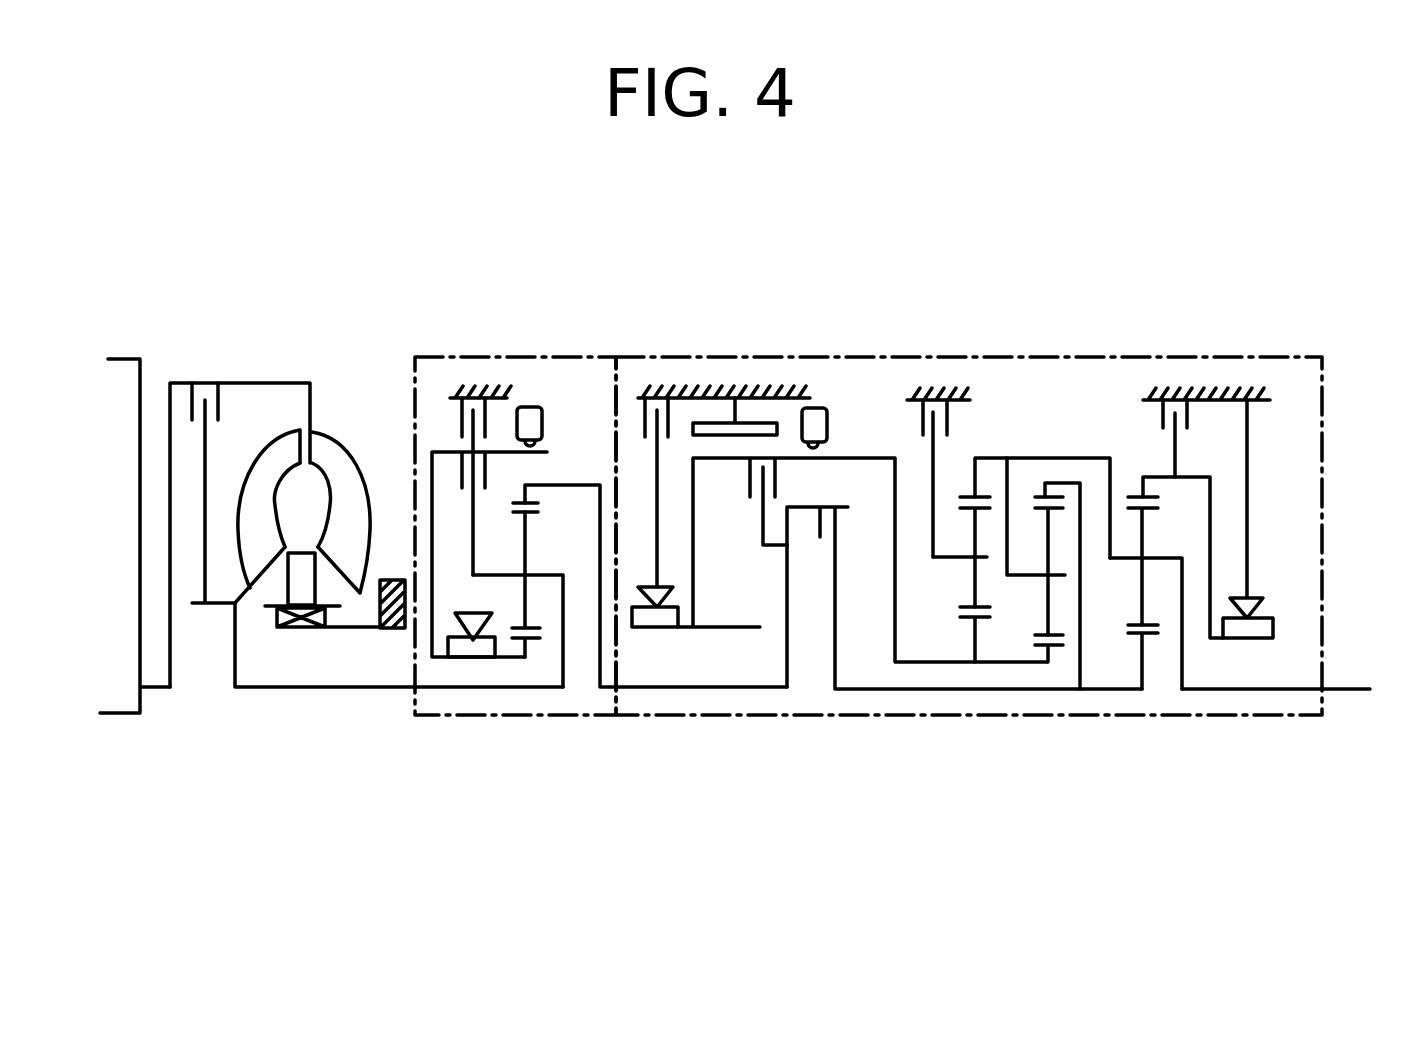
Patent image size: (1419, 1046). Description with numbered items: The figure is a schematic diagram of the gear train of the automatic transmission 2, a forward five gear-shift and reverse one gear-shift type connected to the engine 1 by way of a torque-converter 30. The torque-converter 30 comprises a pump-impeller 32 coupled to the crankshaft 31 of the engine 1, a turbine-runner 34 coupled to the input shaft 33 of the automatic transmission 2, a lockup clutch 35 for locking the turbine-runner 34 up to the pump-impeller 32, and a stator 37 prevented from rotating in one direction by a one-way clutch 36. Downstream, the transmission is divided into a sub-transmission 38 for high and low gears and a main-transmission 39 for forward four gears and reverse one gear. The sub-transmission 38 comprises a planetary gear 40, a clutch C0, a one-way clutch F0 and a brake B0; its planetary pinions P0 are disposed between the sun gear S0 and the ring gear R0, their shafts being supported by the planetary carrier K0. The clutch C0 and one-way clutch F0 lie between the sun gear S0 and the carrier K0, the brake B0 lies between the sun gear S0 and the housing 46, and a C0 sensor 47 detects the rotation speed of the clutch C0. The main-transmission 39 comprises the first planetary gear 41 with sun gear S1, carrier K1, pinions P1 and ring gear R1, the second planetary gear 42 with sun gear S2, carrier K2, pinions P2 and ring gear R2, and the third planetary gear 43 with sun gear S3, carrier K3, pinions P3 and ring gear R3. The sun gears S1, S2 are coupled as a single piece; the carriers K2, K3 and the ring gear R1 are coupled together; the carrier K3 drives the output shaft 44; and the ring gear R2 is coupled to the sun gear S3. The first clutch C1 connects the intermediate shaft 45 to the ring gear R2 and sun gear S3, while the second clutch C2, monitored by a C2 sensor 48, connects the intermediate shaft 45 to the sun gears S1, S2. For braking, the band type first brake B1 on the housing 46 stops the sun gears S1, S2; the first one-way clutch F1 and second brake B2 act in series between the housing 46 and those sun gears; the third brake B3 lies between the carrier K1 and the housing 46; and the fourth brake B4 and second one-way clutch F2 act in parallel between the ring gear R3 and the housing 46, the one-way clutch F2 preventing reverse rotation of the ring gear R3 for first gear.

The engine 1 is at (124, 373).
The automatic transmission 2 is at (868, 465).
The torque-converter 30 is at (309, 471).
The crankshaft 31 is at (153, 688).
The pump-impeller 32 is at (333, 457).
The input shaft 33 is at (337, 688).
The turbine-runner 34 is at (272, 450).
The lockup clutch 35 is at (184, 386).
The one-way clutch 36 is at (297, 628).
The stator 37 is at (297, 572).
The sub-transmission 38 is at (527, 357).
The main-transmission 39 is at (1145, 357).
The planetary gear 40 is at (522, 627).
The first planetary gear 41 is at (971, 596).
The second planetary gear 42 is at (1021, 551).
The third planetary gear 43 is at (1153, 603).
The output shaft 44 is at (1282, 692).
The intermediate shaft 45 is at (760, 688).
The housing 46 is at (489, 383).
The C0 sensor 47 is at (542, 421).
The C2 sensor 48 is at (815, 408).
The brake B0 is at (460, 417).
The first brake B1 is at (770, 424).
The second brake B2 is at (640, 400).
The third brake B3 is at (922, 422).
The fourth brake B4 is at (1188, 417).
The clutch C0 is at (453, 476).
The first clutch C1 is at (851, 512).
The second clutch C2 is at (750, 472).
The one-way clutch F0 is at (463, 650).
The first one-way clutch F1 is at (658, 618).
The second one-way clutch F2 is at (1238, 628).
The ring gear R0 is at (518, 503).
The ring gear R1 is at (978, 497).
The ring gear R2 is at (1040, 497).
The ring gear R3 is at (1137, 497).
The sun gear S0 is at (518, 643).
The sun gear S1 is at (962, 627).
The sun gear S2 is at (1043, 660).
The sun gear S3 is at (1140, 638).
The planetary pinions P0 is at (506, 538).
The planetary pinions P1 is at (970, 513).
The planetary pinions P2 is at (1042, 628).
The planetary pinions P3 is at (1133, 623).
The planetary carrier K0 is at (547, 572).
The planetary carrier K1 is at (958, 557).
The planetary carrier K2 is at (1027, 573).
The planetary carrier K3 is at (1168, 558).